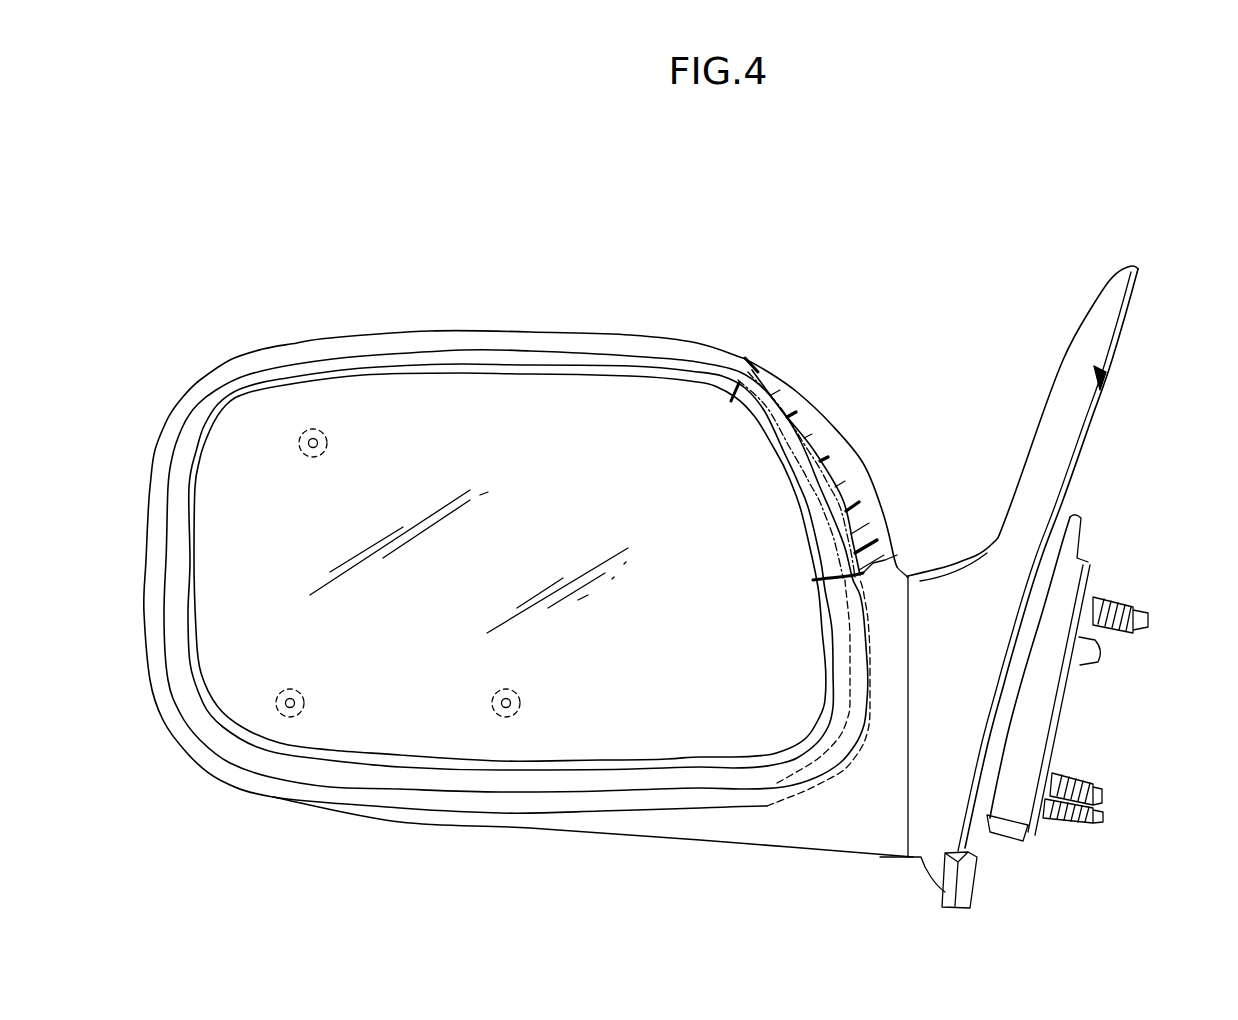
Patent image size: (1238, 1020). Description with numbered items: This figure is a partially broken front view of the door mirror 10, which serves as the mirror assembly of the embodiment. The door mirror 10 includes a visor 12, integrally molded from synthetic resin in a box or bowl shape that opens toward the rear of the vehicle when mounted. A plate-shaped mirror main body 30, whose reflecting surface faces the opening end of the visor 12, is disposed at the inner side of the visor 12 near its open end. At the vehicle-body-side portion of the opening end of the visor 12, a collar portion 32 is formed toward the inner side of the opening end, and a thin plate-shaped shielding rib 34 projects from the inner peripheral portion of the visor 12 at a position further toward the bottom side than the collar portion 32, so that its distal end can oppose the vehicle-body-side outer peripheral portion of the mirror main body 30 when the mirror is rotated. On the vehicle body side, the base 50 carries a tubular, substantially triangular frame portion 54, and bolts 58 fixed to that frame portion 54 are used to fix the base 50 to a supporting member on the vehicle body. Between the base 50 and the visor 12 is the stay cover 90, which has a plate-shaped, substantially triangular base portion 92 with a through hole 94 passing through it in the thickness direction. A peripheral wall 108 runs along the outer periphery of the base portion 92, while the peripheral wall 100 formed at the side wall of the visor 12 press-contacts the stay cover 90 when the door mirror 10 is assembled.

The door mirror 10 is at (873, 285).
The visor 12 is at (737, 326).
The mirror main body 30 is at (610, 412).
The collar portion 32 is at (837, 627).
The shielding rib 34 is at (817, 513).
The base 50 is at (1115, 553).
The frame portion 54 is at (1043, 693).
The bolts 58 is at (1140, 610).
The stay cover 90 is at (993, 456).
The base portion 92 is at (1063, 360).
The through hole 94 is at (952, 572).
The peripheral wall 100 is at (903, 570).
The peripheral wall 108 is at (1058, 413).